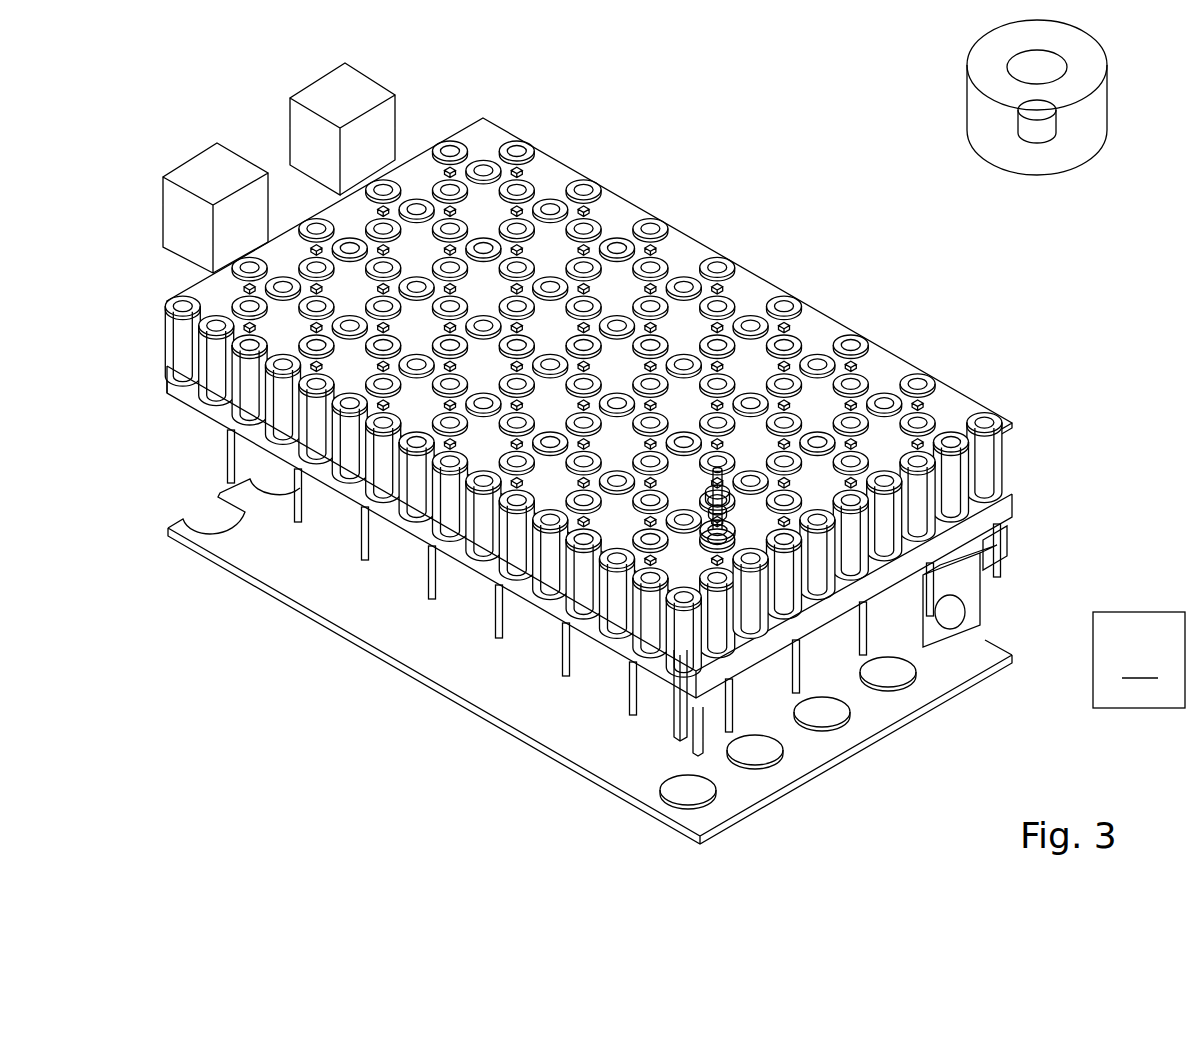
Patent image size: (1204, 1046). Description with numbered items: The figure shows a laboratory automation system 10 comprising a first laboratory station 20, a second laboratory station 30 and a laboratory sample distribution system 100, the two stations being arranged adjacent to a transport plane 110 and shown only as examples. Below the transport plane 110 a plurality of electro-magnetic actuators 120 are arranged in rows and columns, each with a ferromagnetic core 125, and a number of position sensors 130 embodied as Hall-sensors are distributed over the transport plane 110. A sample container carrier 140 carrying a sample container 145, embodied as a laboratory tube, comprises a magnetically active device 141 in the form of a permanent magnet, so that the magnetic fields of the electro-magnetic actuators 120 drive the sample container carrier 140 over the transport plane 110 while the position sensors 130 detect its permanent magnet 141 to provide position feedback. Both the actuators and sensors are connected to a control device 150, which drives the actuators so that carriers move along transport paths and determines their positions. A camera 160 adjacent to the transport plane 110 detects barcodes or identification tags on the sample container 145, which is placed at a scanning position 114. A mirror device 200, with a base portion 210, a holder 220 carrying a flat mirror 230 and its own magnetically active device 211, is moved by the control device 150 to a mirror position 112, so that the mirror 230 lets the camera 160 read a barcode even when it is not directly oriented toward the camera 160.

The laboratory automation system 10 is at (336, 770).
The first laboratory station 20 is at (205, 160).
The second laboratory station 30 is at (318, 95).
The laboratory sample distribution system 100 is at (267, 635).
The transport plane 110 is at (886, 362).
The mirror position 112 is at (667, 540).
The scanning position 114 is at (740, 540).
The electro-magnetic actuator 120 is at (690, 640).
The ferromagnetic core 125 is at (690, 618).
The position sensor 130 is at (712, 275).
The sample container carrier 140 is at (936, 94).
The magnetically active device 141 is at (1052, 136).
The sample container 145 is at (772, 528).
The control device 150 is at (1139, 660).
The camera 160 is at (815, 530).
The mirror device 200 is at (673, 473).
The base portion 210 is at (668, 560).
The magnetically active device 211 is at (660, 530).
The holder 220 is at (655, 515).
The mirror 230 is at (648, 500).